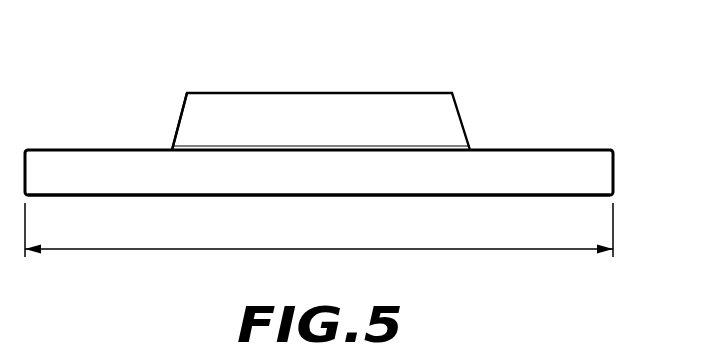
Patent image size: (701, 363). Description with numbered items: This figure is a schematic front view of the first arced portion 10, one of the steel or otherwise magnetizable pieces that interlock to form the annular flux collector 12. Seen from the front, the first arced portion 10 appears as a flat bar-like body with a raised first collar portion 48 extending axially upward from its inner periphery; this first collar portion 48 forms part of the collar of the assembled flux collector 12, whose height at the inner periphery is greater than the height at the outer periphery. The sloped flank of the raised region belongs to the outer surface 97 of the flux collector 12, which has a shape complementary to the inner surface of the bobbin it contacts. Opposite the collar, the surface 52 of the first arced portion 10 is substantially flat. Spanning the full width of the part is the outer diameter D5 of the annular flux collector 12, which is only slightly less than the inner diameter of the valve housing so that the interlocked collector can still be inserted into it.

The first arced portion 10 is at (503, 159).
The annular flux collector 12 is at (600, 98).
The first collar portion 48 is at (355, 112).
The outer surface 97 is at (173, 115).
The surface 52 is at (465, 204).
The outer diameter D5 is at (431, 249).